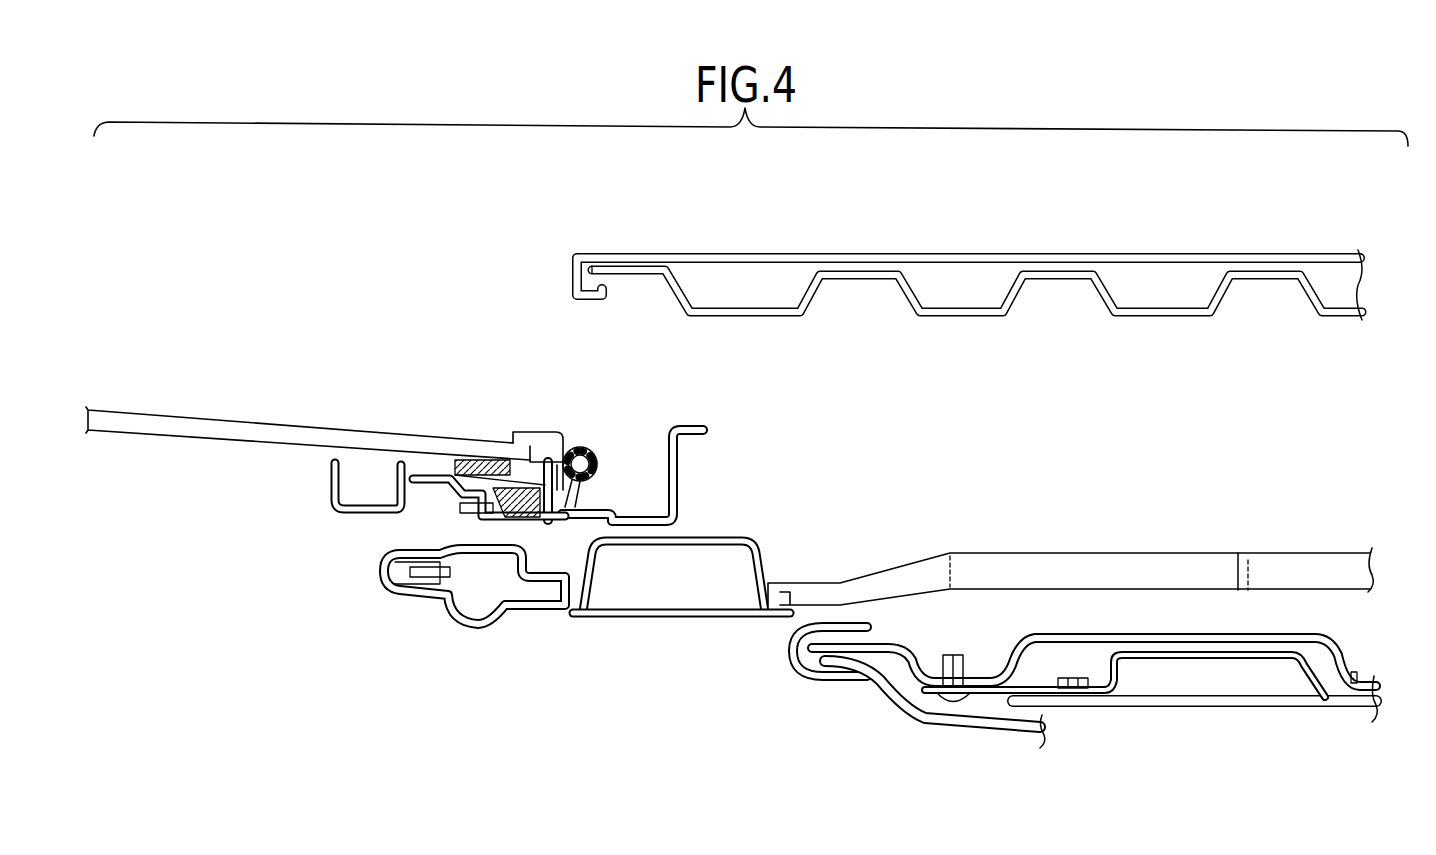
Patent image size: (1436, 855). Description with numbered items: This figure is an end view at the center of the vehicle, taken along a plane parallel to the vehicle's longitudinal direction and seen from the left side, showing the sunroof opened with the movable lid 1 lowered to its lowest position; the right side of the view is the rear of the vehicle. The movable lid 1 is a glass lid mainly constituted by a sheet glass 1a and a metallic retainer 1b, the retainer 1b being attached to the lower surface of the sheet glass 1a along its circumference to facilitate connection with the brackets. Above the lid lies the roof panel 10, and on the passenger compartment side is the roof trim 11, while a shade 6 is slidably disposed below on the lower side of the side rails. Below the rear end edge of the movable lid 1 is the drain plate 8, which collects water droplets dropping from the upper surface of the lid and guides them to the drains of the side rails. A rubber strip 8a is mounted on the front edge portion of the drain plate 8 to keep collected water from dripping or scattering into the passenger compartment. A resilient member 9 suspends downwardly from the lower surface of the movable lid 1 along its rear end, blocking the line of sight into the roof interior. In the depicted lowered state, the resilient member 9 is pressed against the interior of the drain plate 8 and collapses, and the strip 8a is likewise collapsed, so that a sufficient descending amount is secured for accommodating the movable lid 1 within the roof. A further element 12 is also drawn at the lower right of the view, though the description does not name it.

The movable lid 1 is at (433, 380).
The sheet glass 1a is at (337, 442).
The retainer 1b is at (370, 507).
The shade 6 is at (1128, 575).
The drain plate 8 is at (550, 501).
The rubber strip 8a is at (438, 497).
The resilient member 9 is at (523, 508).
The roof panel 10 is at (722, 252).
The roof trim 11 is at (1008, 738).
The side rail panel 12 is at (1340, 652).